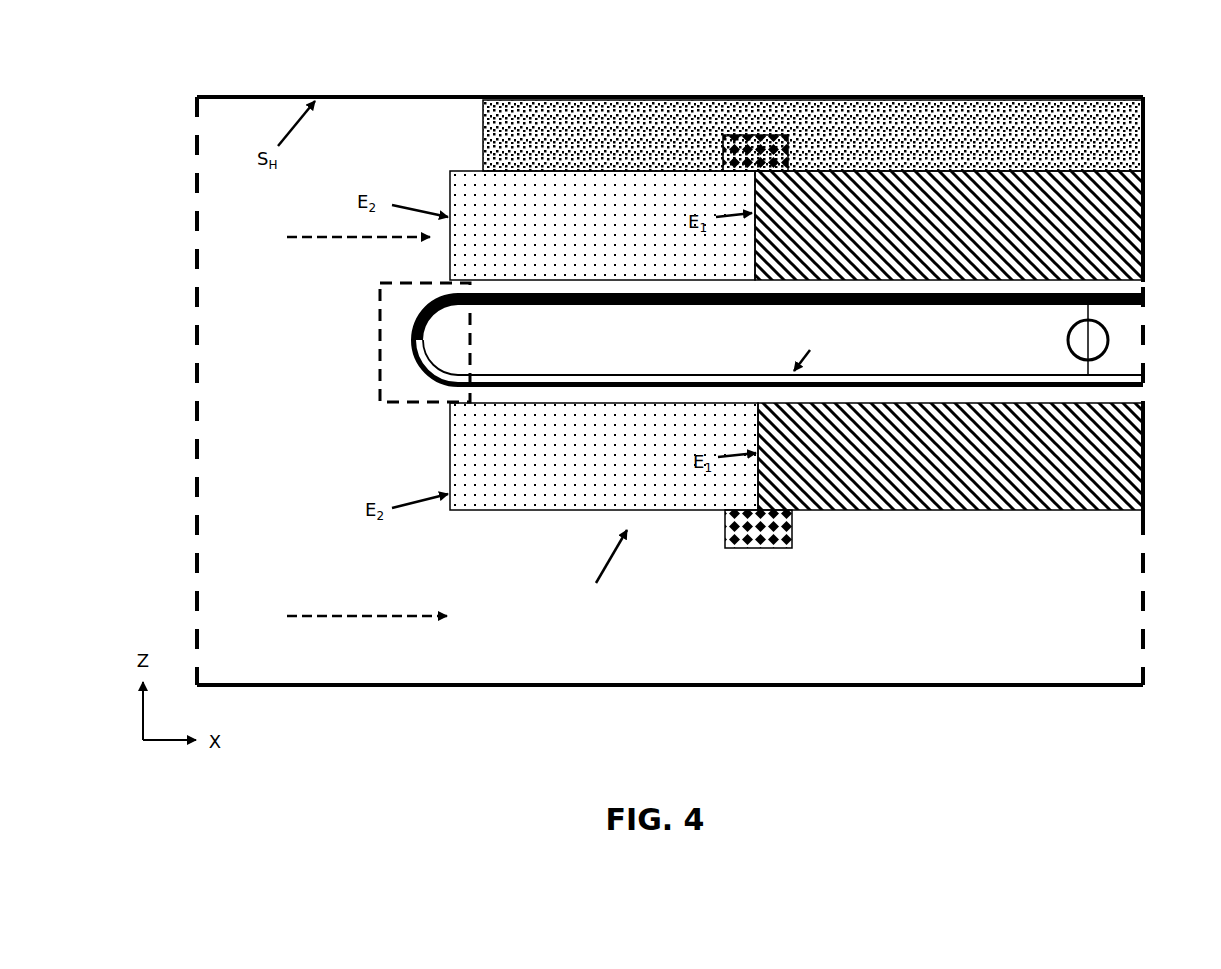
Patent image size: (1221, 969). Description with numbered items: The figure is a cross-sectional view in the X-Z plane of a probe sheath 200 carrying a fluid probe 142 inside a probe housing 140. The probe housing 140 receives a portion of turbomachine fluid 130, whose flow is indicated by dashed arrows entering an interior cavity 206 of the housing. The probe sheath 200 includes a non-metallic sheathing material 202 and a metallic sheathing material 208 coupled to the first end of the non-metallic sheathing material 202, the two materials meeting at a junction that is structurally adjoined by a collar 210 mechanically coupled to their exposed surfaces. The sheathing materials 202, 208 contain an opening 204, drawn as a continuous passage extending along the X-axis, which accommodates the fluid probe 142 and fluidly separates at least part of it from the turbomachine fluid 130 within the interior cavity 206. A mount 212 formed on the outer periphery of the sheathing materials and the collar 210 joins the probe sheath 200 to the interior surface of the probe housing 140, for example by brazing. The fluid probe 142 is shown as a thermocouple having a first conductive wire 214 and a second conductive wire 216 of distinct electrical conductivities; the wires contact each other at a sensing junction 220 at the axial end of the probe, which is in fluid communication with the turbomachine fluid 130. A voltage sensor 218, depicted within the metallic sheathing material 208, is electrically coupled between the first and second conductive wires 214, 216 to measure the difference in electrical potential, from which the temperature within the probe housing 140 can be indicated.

The probe housing 140 is at (362, 95).
The mount 212 is at (552, 125).
The collar 210 is at (775, 128).
The non-metallic sheathing material 202 is at (475, 190).
The metallic sheathing material 208 is at (1128, 240).
The turbomachine fluid 130 is at (345, 427).
The first conductive wire 214 is at (763, 305).
The second conductive wire 216 is at (628, 382).
The opening 204 is at (744, 344).
The sensing junction 220 is at (378, 338).
The fluid probe 142 is at (811, 348).
The voltage sensor 218 is at (1078, 345).
The interior cavity 206 is at (288, 541).
The probe sheath 200 is at (596, 567).